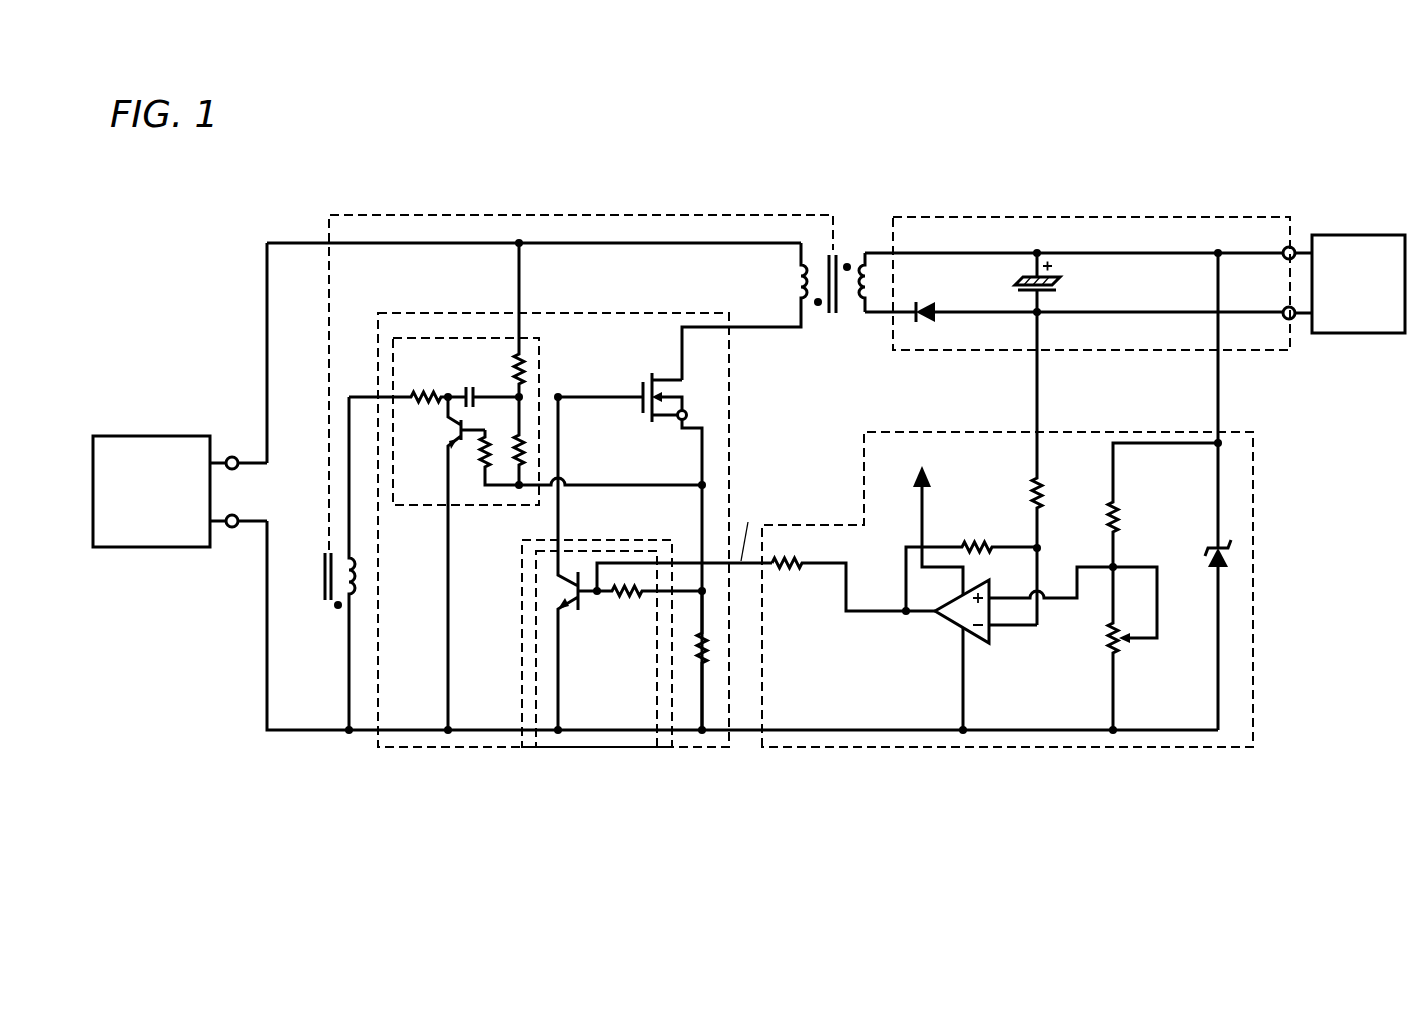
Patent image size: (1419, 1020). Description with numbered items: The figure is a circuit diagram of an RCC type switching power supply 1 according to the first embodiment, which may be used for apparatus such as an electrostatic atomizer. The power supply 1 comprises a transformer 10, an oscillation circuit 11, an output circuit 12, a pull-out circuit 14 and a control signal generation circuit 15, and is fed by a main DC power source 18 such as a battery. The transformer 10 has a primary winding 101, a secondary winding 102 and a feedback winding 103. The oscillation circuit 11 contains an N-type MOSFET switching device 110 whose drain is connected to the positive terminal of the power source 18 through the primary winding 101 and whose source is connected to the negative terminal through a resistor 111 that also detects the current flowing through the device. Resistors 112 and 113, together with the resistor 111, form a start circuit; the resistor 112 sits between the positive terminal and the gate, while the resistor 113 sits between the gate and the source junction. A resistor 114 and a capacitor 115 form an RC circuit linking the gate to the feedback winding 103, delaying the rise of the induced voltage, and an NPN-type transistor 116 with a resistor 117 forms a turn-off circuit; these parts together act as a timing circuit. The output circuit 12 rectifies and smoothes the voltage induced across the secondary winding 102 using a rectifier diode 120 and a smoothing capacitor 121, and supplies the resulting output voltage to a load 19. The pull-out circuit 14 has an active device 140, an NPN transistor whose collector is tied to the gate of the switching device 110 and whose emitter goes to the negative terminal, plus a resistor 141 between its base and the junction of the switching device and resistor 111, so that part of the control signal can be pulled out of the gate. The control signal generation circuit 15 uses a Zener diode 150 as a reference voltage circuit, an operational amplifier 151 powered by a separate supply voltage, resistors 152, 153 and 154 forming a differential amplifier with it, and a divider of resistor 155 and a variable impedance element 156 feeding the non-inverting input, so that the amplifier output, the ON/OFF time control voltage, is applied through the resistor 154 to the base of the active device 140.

The switching power supply 1 is at (1181, 191).
The transformer 10 is at (790, 271).
The oscillation circuit 11 is at (593, 312).
The output circuit 12 is at (1080, 253).
The pull-out circuit 14 is at (583, 750).
The control signal generation circuit 15 is at (848, 750).
The main DC power source 18 is at (115, 446).
The load 19 is at (1362, 247).
The primary winding 101 is at (797, 297).
The secondary winding 102 is at (868, 300).
The feedback winding 103 is at (335, 607).
The switching device 110 is at (622, 386).
The resistor 111 is at (706, 655).
The resistor 112 is at (525, 372).
The resistor 113 is at (525, 449).
The resistor 114 is at (429, 390).
The capacitor 115 is at (483, 381).
The NPN-type transistor 116 is at (446, 432).
The resistor 117 is at (480, 478).
The rectifier diode 120 is at (929, 295).
The smoothing capacitor 121 is at (1056, 282).
The active device 140 is at (570, 612).
The resistor 141 is at (649, 607).
The Zener diode 150 is at (1200, 491).
The operational amplifier 151 is at (962, 613).
The resistor 152 is at (1058, 468).
The resistor 153 is at (971, 559).
The resistor 154 is at (853, 584).
The resistor 155 is at (1163, 505).
The impedance element 156 is at (1110, 648).